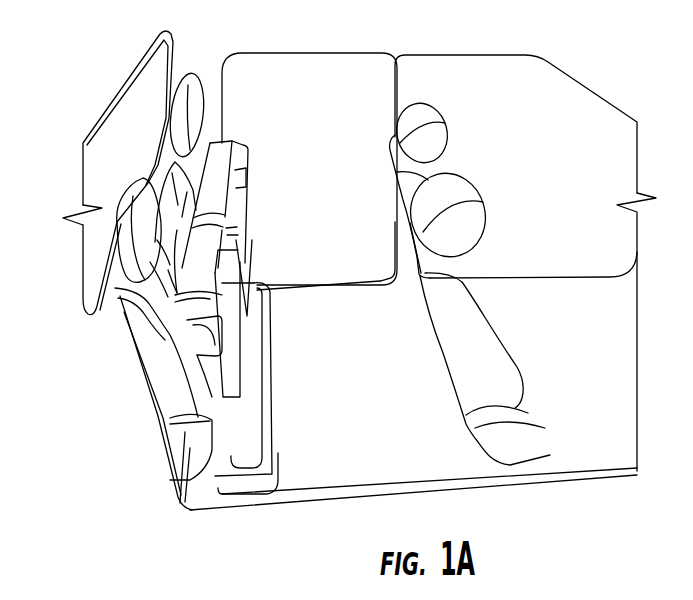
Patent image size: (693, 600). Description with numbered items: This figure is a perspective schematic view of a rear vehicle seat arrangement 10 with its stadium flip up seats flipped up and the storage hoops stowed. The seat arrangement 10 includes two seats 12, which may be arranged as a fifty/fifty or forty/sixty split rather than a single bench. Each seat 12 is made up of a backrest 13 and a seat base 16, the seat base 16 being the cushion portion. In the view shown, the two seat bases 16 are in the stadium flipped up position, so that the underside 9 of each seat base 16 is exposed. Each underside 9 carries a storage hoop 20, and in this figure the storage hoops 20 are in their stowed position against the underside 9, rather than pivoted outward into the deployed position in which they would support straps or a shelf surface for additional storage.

The seat arrangement 10 is at (144, 165).
The underside 9 is at (250, 204).
The seat base 16 is at (226, 142).
The storage hoop 20 is at (232, 242).
The backrest 13 is at (145, 337).
The seat 12 is at (141, 389).